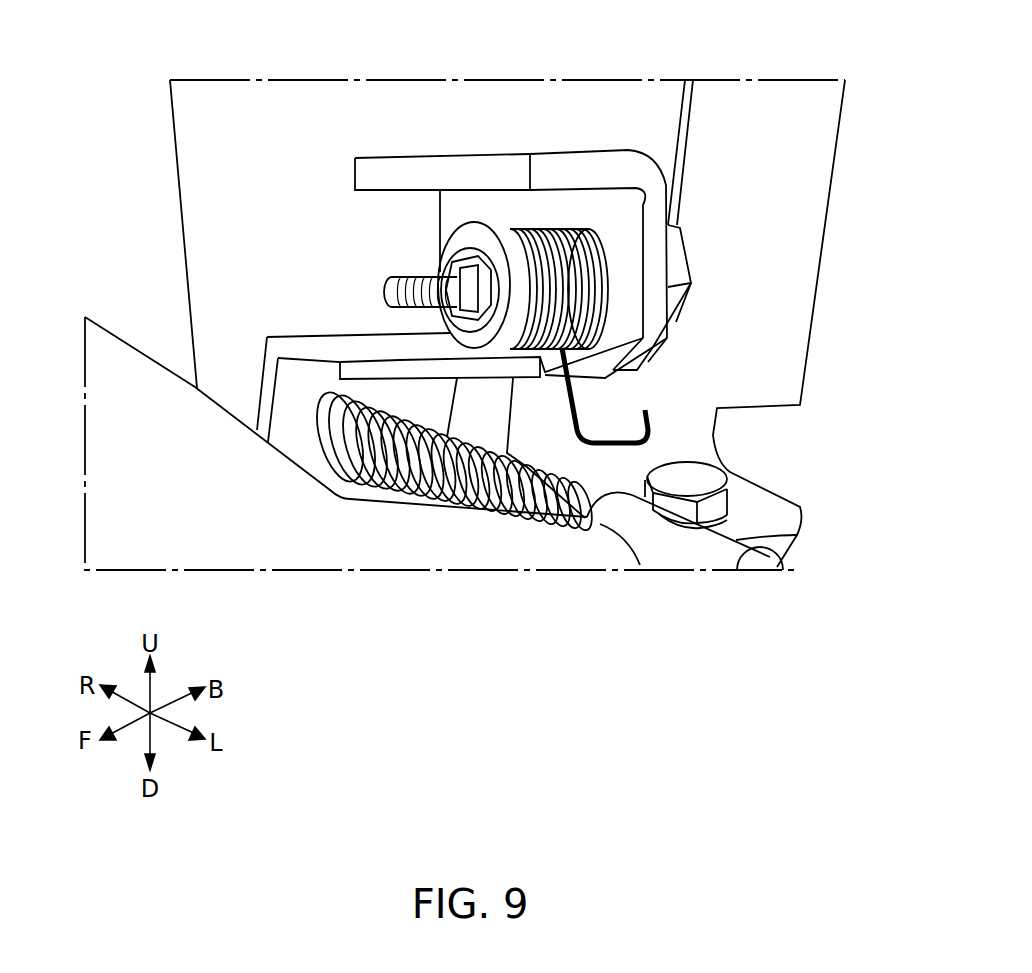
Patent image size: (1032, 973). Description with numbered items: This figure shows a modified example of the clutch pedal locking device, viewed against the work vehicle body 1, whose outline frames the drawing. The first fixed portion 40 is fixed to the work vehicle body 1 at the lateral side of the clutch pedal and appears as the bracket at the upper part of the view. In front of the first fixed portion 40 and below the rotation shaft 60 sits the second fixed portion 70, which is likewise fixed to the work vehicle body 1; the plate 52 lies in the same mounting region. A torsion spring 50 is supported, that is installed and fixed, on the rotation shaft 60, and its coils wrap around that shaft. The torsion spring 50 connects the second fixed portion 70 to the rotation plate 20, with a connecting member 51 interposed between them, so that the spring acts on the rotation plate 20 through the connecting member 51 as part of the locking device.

The work vehicle body 1 is at (240, 307).
The rotation plate 20 is at (644, 388).
The first fixed portion 40 is at (577, 170).
The torsion spring 50 is at (538, 322).
The connecting member 51 is at (619, 456).
The mounting plate 52 is at (420, 350).
The rotation shaft 60 is at (410, 284).
The second fixed portion 70 is at (372, 347).